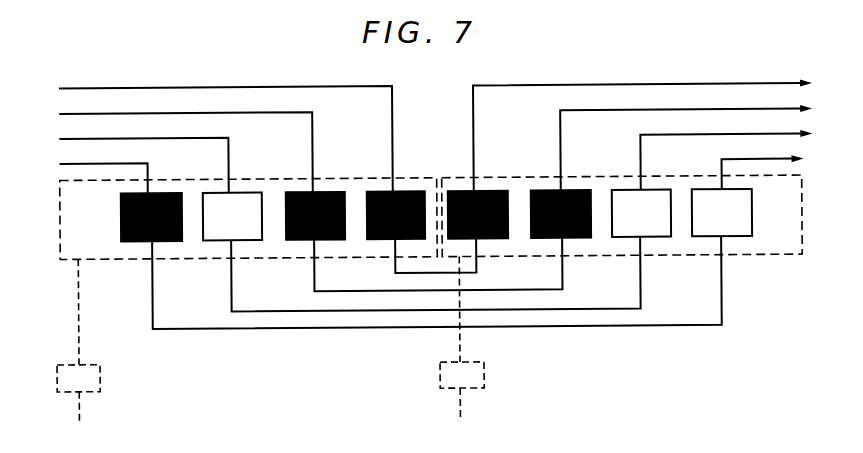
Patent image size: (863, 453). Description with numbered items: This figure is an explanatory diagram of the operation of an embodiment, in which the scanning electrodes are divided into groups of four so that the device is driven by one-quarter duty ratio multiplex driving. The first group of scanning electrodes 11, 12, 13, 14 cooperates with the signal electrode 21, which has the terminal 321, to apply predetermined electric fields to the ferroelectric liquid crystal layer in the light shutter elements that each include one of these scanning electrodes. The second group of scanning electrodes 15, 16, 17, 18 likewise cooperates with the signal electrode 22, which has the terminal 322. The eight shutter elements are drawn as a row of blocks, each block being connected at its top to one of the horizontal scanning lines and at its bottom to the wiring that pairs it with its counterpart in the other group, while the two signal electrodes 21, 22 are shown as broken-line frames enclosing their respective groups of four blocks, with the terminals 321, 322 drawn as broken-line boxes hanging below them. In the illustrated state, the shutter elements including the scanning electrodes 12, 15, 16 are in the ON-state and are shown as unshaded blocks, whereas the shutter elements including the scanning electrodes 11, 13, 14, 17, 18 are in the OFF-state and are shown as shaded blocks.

The scanning electrode 11 is at (162, 194).
The scanning electrode 12 is at (240, 194).
The scanning electrode 13 is at (332, 194).
The scanning electrode 14 is at (412, 194).
The scanning electrode 15 is at (752, 223).
The scanning electrode 16 is at (629, 194).
The scanning electrode 17 is at (545, 194).
The scanning electrode 18 is at (482, 194).
The signal electrode 21 is at (58, 183).
The signal electrode 22 is at (787, 260).
The terminal 321 is at (98, 375).
The terminal 322 is at (482, 377).